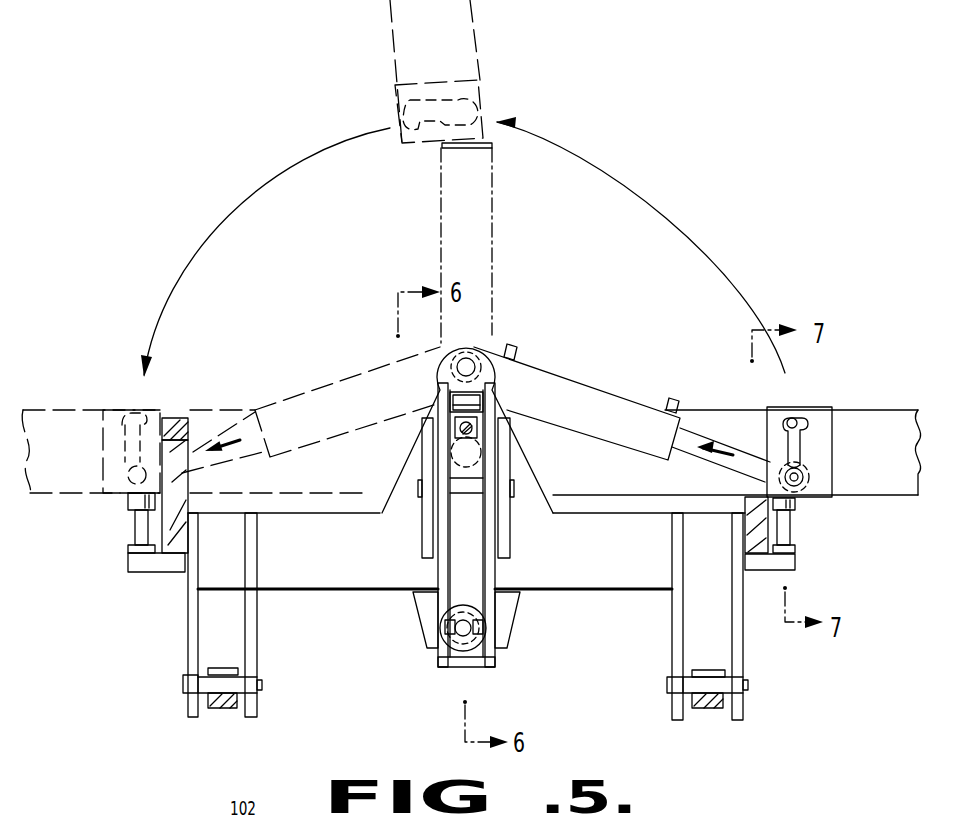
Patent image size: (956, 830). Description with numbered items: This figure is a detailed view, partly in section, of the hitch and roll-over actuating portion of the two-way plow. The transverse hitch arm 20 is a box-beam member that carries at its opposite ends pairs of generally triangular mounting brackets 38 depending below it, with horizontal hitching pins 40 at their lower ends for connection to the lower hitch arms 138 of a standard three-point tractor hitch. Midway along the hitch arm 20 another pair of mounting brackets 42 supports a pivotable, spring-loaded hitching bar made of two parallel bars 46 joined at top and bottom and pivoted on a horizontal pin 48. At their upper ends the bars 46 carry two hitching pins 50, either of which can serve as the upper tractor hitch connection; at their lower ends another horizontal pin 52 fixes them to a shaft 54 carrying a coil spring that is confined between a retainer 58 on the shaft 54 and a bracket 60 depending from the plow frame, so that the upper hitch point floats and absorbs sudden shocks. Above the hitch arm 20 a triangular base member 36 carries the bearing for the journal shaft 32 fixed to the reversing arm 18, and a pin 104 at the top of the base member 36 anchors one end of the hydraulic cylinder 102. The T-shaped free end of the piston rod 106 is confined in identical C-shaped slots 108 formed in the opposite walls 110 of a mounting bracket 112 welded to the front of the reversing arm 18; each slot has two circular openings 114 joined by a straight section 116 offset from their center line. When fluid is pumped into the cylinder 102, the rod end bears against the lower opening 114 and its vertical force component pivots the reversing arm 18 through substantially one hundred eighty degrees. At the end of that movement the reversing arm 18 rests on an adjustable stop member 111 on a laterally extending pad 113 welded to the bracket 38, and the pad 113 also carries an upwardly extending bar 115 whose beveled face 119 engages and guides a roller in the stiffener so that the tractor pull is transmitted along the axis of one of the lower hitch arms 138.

The reversing arm 18 is at (737, 411).
The hitch arm 20 is at (302, 591).
The journal shaft 32 is at (440, 448).
The base member 36 is at (522, 447).
The mounting brackets 38 is at (186, 631).
The hitching pins 40 is at (207, 684).
The mounting brackets 42 is at (423, 522).
The parallel bars 46 is at (437, 568).
The horizontal pin 48 is at (468, 493).
The hitching pins 50 is at (478, 428).
The horizontal pin 52 is at (475, 632).
The shaft 54 is at (460, 630).
The retainer 58 is at (478, 612).
The bracket 60 is at (422, 602).
The hydraulic cylinder 102 is at (560, 375).
The pin 104 is at (478, 345).
The piston rod 106 is at (805, 475).
The C-shaped slots 108 is at (805, 433).
The walls 110 is at (828, 410).
The adjustable stop member 111 is at (133, 512).
The mounting bracket 112 is at (820, 496).
The pad 113 is at (130, 567).
The circular openings 114 is at (795, 418).
The bar 115 is at (186, 457).
The straight section 116 is at (805, 448).
The beveled face 119 is at (173, 420).
The lower hitch arms 138 is at (222, 709).